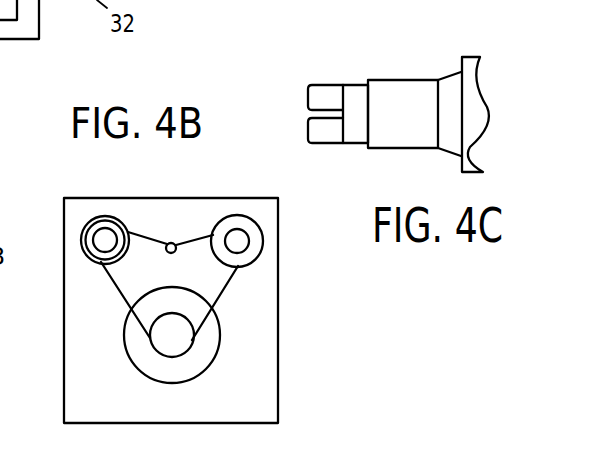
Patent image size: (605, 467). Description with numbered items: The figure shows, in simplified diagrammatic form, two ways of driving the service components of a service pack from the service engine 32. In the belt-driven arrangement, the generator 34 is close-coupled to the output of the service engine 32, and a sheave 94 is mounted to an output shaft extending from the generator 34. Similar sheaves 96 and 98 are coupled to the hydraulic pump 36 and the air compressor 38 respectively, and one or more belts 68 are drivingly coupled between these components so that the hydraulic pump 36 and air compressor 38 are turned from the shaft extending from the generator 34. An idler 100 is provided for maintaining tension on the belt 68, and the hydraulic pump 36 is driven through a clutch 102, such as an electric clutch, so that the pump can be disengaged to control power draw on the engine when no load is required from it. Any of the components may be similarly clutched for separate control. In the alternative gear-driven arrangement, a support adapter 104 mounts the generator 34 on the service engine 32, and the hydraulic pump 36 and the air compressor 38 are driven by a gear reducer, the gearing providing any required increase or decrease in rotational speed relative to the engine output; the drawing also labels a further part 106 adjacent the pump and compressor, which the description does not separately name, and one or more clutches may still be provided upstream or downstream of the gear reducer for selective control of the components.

In FIG. 4B, the service engine 32 is at (279, 385).
In FIG. 4C, the service engine 32 is at (473, 57).
In FIG. 4B, the generator 34 is at (128, 357).
In FIG. 4C, the generator 34 is at (390, 148).
In FIG. 4B, the hydraulic pump 36 is at (88, 226).
In FIG. 4C, the hydraulic pump 36 is at (327, 84).
In FIG. 4B, the air compressor 38 is at (262, 250).
In FIG. 4C, the air compressor 38 is at (323, 145).
In FIG. 4B, the belts or chains 68 is at (115, 285).
In FIG. 4B, the sheave 94 is at (176, 336).
In FIG. 4B, the sheave 96 is at (105, 240).
In FIG. 4B, the sheave 98 is at (237, 240).
In FIG. 4B, the idler 100 is at (171, 243).
In FIG. 4B, the clutch 102 is at (97, 218).
In FIG. 4C, the support adapter 104 is at (452, 78).
In FIG. 4C, the collar 106 is at (357, 83).